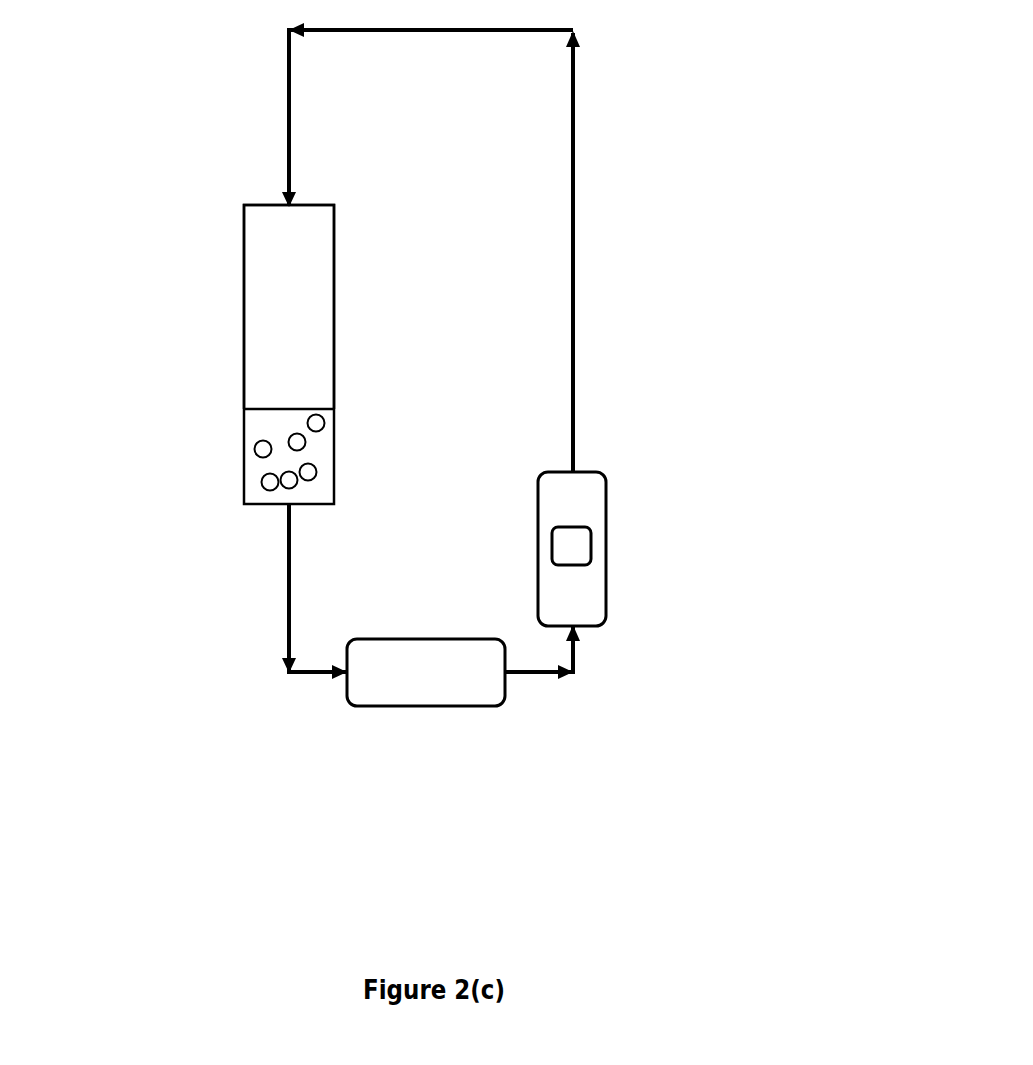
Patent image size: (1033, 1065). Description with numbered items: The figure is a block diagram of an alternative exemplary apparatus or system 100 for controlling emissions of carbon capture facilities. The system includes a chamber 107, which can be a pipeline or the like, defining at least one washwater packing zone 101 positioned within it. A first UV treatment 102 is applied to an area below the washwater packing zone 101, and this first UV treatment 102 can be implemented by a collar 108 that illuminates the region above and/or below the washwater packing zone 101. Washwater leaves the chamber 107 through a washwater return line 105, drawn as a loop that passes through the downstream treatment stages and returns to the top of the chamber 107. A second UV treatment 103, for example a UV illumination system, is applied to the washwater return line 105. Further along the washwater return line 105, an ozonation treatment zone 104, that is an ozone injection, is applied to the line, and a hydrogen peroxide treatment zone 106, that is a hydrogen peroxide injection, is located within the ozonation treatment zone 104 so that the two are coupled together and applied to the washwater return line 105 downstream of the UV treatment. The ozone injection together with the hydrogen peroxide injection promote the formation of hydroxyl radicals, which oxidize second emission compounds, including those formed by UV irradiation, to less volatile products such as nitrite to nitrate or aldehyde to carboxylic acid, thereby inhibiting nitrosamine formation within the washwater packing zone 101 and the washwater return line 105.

The apparatus or system 100 is at (612, 288).
The washwater packing zone 101 is at (244, 259).
The first UV treatment 102 is at (244, 459).
The second UV treatment 103 is at (347, 706).
The ozonation treatment zone 104 is at (606, 575).
The washwater return line 105 is at (289, 594).
The hydrogen peroxide treatment zone 106 is at (591, 540).
The chamber 107 is at (222, 334).
The collar 108 is at (296, 409).